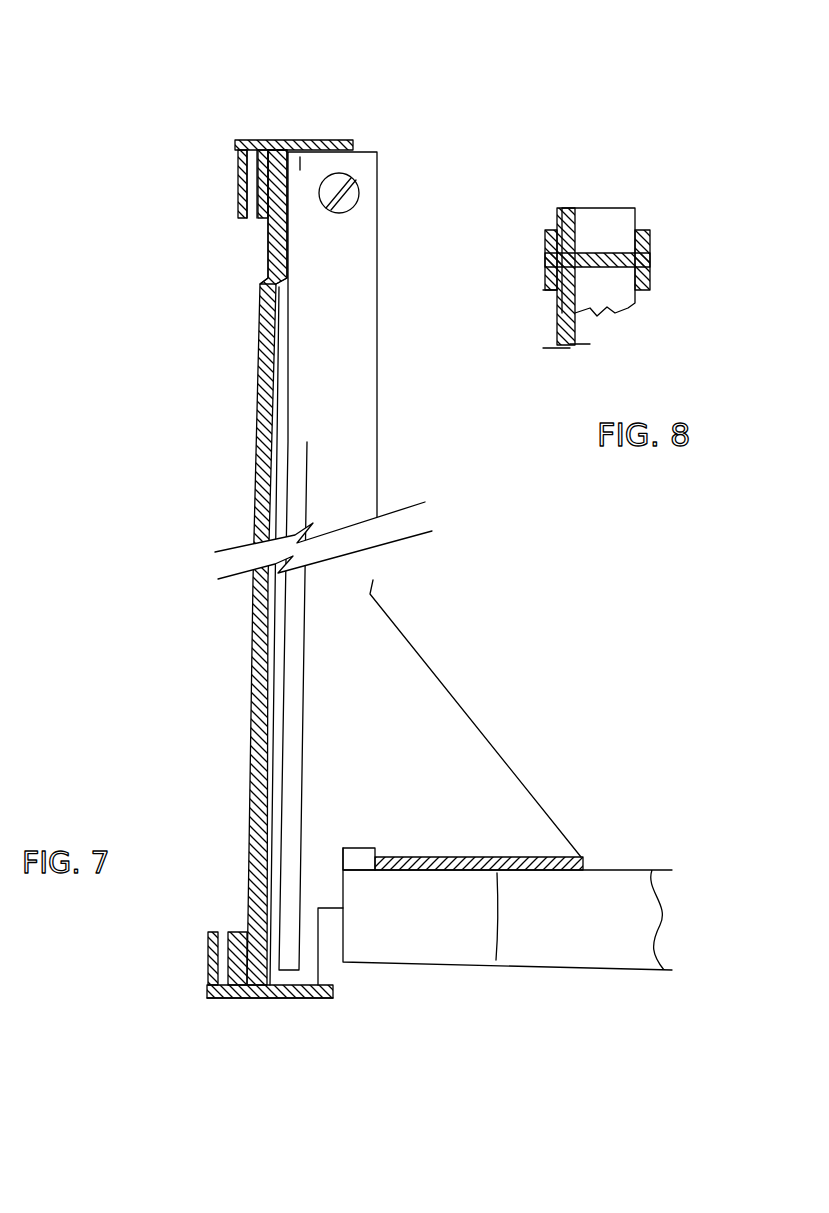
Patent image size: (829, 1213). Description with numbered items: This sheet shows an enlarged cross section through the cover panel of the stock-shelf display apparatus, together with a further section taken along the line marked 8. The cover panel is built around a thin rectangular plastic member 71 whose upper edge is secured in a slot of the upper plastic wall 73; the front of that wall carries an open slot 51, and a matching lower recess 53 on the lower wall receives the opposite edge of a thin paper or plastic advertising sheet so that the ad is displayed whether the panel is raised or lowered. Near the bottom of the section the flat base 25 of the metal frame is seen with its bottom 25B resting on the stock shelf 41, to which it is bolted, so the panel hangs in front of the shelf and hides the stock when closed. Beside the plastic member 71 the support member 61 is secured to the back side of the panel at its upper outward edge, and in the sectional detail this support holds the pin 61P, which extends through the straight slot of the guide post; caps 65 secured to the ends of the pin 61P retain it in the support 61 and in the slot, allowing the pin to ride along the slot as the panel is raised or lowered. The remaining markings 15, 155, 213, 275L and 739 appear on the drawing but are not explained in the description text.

In FIG. 7, the section line 8— 8 is at (337, 133).
In FIG. 7, the base plate 15 is at (236, 999).
In FIG. 7, the base 25 is at (524, 838).
In FIG. 7, the bottom of the base 25B is at (492, 966).
In FIG. 7, the stock shelf 41 is at (628, 980).
In FIG. 7, the recess (open slot) 51 is at (248, 222).
In FIG. 7, the recess (open slot) 53 is at (223, 930).
In FIG. 7, the support member 61 is at (350, 327).
In FIG. 8, the support member 61 is at (607, 207).
In FIG. 8, the pin 61P is at (597, 254).
In FIG. 8, the caps 65 is at (547, 273).
In FIG. 7, the thin rectangular plastic member 71 is at (262, 421).
In FIG. 7, the upper plastic wall 73 is at (260, 138).
In FIG. 7, the base flange 155 is at (247, 999).
In FIG. 8, the strip 213 is at (568, 207).
In FIG. 7, the lower slide channel 275L is at (287, 973).
In FIG. 7, the panel lip 739 is at (287, 158).